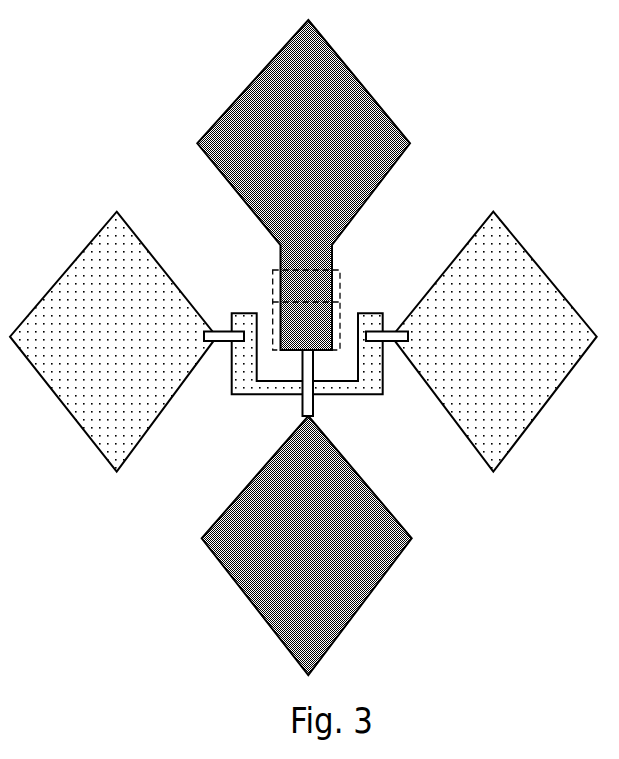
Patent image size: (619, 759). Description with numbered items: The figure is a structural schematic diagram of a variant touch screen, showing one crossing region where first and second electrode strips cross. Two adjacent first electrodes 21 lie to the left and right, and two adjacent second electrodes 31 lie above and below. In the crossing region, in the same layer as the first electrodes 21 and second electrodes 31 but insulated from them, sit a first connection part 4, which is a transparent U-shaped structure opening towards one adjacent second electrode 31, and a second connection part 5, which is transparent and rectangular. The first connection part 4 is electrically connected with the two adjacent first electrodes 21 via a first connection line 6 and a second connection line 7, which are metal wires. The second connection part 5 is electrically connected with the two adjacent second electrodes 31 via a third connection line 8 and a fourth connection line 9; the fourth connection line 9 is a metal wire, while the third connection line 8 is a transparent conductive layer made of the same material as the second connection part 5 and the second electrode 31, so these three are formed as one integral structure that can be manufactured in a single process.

The second electrode 31 is at (363, 132).
The first electrode 21 is at (138, 260).
The first connection part 4 is at (370, 313).
The second connection part 5 is at (343, 320).
The first connection line 6 is at (232, 336).
The second connection line 7 is at (387, 336).
The third connection line 8 is at (278, 272).
The fourth connection line 9 is at (308, 390).